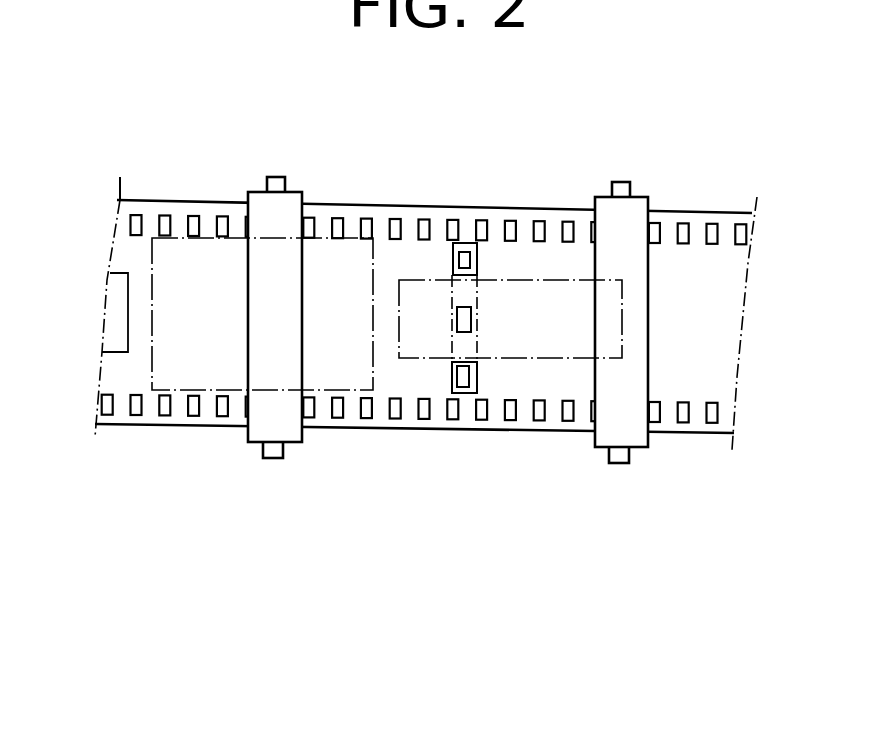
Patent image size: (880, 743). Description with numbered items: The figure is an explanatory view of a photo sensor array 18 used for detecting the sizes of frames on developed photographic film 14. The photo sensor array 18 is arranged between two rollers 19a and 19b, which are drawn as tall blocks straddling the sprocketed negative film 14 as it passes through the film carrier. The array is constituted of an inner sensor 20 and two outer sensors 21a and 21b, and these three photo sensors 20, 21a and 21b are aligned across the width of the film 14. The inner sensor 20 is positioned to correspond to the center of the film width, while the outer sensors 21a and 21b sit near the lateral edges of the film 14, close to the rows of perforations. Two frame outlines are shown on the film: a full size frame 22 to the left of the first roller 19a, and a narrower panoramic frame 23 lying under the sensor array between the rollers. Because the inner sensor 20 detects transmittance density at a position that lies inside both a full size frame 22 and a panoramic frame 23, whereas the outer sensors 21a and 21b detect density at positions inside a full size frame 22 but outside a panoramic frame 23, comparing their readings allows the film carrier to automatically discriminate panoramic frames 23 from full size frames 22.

The photographic film 14 is at (150, 200).
The photo sensor array 18 is at (460, 393).
The roller 19a is at (262, 203).
The roller 19b is at (635, 205).
The inner sensor 20 is at (471, 318).
The outer sensor 21a is at (467, 252).
The outer sensor 21b is at (453, 378).
The full size frame 22 is at (178, 367).
The panoramic frame 23 is at (500, 359).